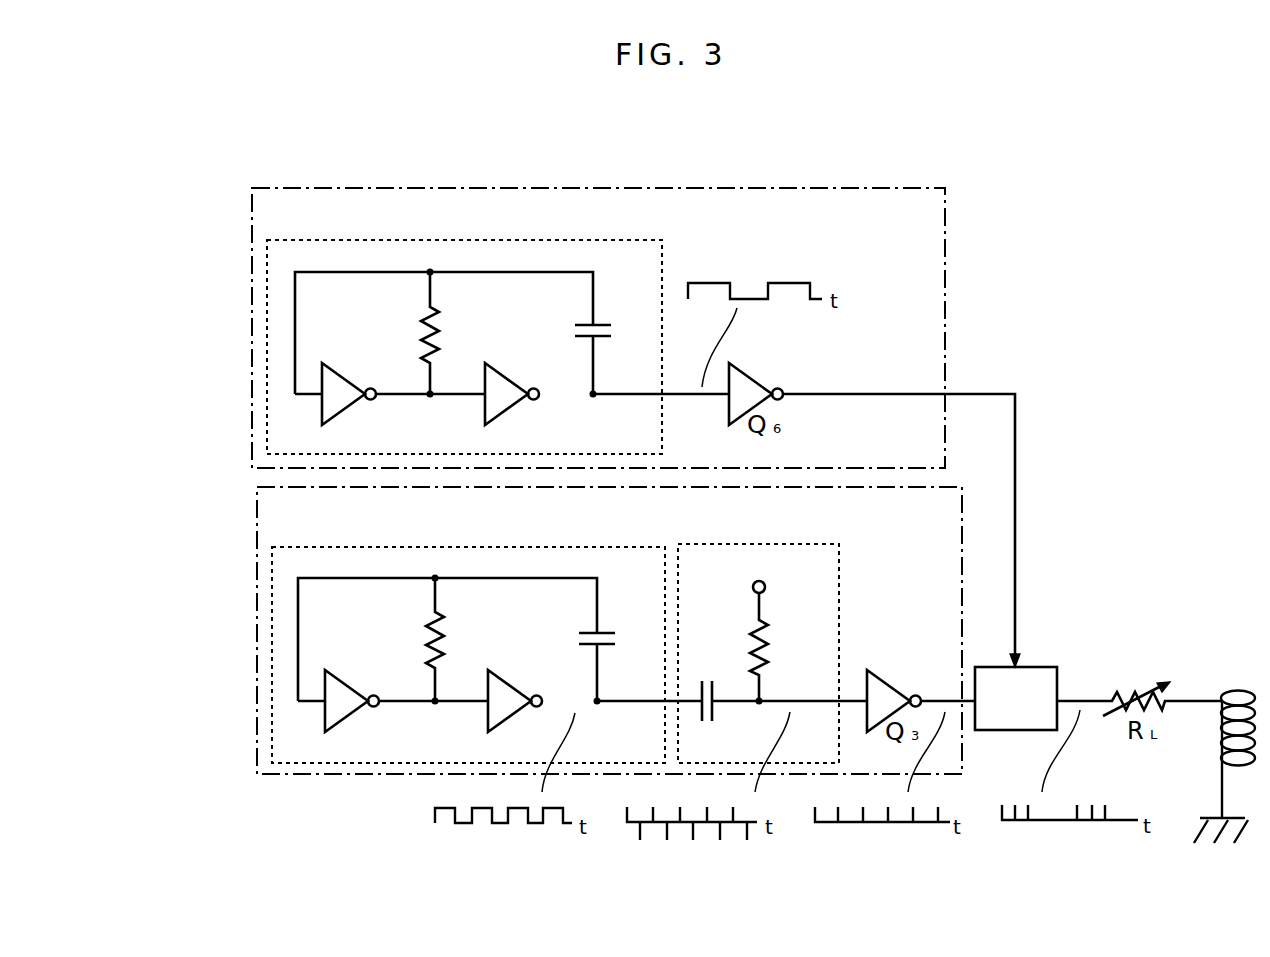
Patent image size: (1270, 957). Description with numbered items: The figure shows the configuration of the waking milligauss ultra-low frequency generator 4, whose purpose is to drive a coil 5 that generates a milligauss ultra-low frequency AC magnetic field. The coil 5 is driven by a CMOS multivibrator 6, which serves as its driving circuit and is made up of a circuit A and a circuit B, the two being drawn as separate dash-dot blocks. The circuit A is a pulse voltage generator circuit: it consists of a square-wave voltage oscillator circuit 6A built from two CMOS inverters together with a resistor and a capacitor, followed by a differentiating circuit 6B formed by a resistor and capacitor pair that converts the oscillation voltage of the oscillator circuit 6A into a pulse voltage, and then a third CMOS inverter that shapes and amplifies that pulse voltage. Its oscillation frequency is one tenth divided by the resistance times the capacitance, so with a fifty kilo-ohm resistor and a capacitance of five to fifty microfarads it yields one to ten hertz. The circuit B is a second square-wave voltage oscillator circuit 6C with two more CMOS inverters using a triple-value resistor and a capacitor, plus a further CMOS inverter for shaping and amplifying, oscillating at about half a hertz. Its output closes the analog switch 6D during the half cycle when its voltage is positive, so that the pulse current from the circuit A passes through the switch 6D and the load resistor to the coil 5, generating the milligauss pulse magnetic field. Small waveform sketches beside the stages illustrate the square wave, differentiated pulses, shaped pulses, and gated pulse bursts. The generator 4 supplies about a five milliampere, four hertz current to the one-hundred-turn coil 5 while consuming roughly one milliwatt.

The waking milligauss ultra-low frequency generator 4 is at (207, 174).
The coil for generating a milligauss ultra-low frequency AC magnetic field 5 is at (1233, 688).
The CMOS multivibrator 6 is at (200, 307).
The square-wave voltage oscillator circuit 6A is at (627, 547).
The differentiating circuit 6B is at (785, 542).
The square-wave voltage oscillator circuit 6C is at (620, 240).
The analog switch 6D is at (1040, 665).
The circuit A is at (257, 650).
The circuit B is at (253, 347).